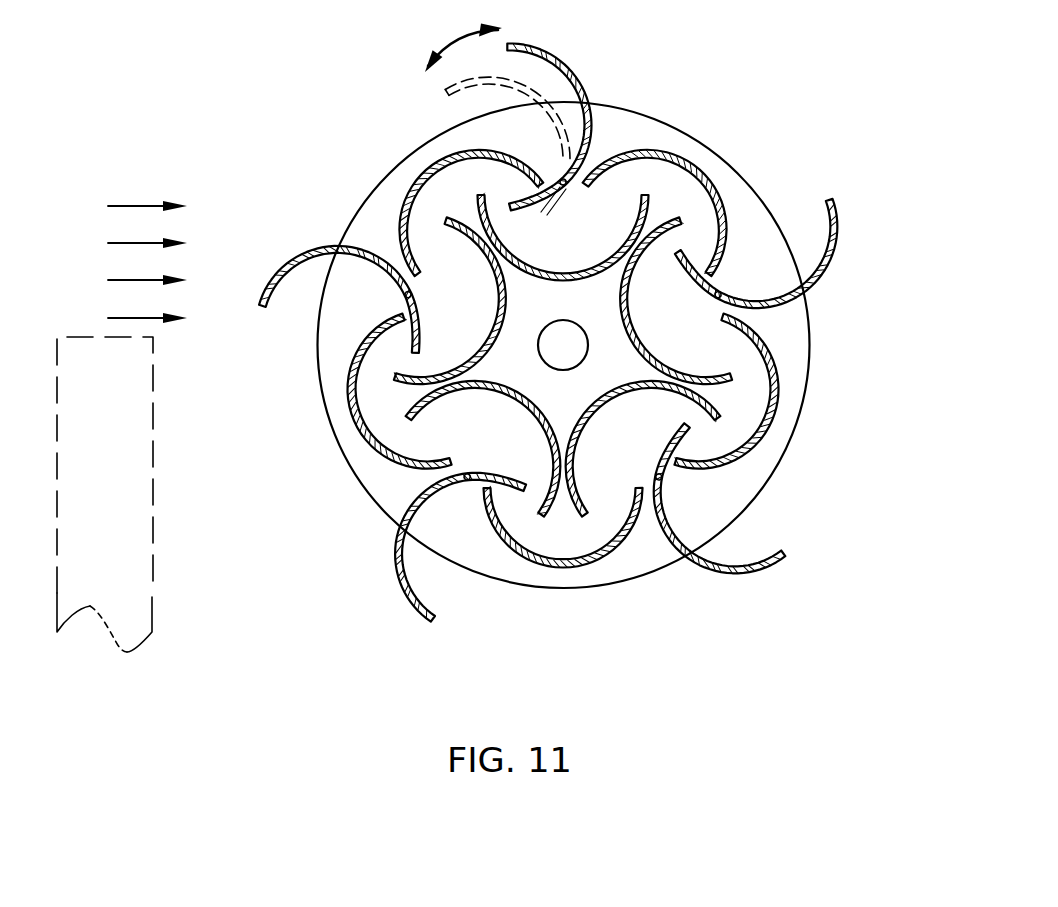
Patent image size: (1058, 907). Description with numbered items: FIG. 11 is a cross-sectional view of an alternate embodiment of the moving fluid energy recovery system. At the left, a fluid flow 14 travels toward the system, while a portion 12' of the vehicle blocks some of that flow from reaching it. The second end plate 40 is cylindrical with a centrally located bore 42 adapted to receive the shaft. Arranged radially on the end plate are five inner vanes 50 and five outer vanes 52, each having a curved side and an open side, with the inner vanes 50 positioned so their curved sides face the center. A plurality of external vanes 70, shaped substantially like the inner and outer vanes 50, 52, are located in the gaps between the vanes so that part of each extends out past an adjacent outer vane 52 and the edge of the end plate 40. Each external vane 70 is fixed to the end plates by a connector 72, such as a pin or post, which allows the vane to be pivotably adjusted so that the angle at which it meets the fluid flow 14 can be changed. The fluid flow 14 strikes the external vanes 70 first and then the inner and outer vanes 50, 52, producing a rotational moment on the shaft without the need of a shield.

The portion of the vehicle 12' is at (168, 512).
The fluid flow 14 is at (145, 203).
The second end plate 40 is at (648, 104).
The central bore 42 is at (586, 332).
The inner vane 50 is at (637, 222).
The outer vane 52 is at (425, 163).
The external vane 70 is at (566, 64).
The connector 72 is at (561, 179).